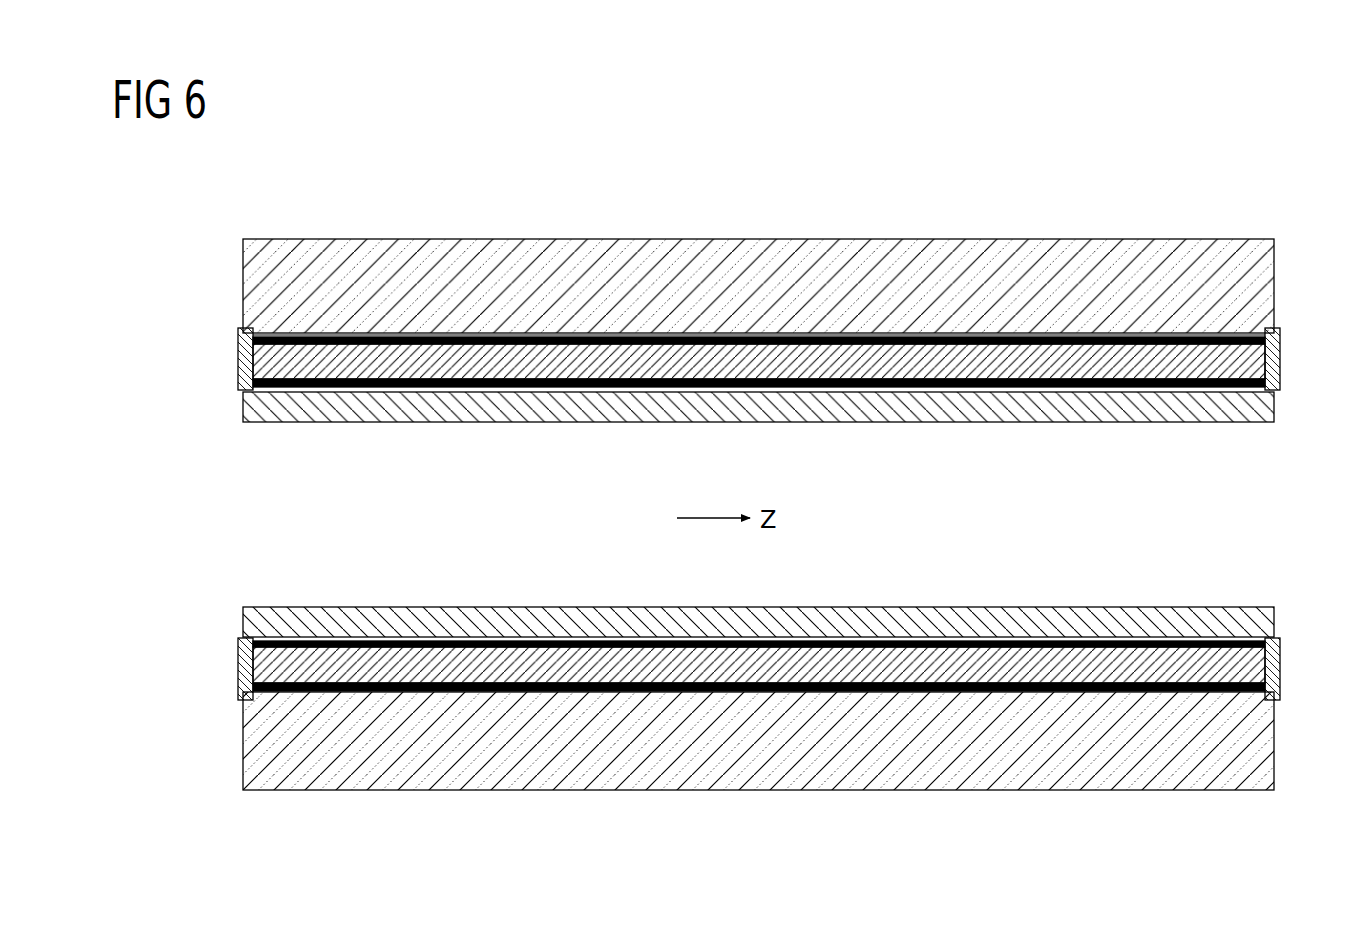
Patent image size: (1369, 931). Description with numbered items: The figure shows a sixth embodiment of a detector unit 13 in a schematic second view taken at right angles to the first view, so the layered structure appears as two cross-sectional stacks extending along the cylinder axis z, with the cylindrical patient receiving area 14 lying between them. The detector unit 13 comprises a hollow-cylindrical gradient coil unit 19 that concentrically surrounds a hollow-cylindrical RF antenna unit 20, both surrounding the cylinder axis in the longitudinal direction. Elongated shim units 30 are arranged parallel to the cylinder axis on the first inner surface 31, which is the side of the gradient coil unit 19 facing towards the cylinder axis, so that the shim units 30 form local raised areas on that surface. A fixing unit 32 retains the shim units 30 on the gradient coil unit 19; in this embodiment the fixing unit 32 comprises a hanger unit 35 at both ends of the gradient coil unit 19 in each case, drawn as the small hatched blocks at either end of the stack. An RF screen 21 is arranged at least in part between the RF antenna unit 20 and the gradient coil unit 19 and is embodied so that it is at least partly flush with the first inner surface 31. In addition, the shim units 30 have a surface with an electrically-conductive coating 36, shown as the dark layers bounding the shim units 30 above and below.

The detector unit 13 is at (1250, 177).
The patient receiving area 14 is at (258, 509).
The gradient coil unit 19 is at (270, 288).
The RF antenna unit 20 is at (258, 405).
The RF screen 21 is at (1176, 336).
The shim unit 30 is at (1250, 367).
The first inner surface 31 is at (340, 322).
The fixing unit 32 is at (245, 357).
The hanger unit 35 is at (250, 357).
The electrically-conductive coating 36 is at (1232, 341).